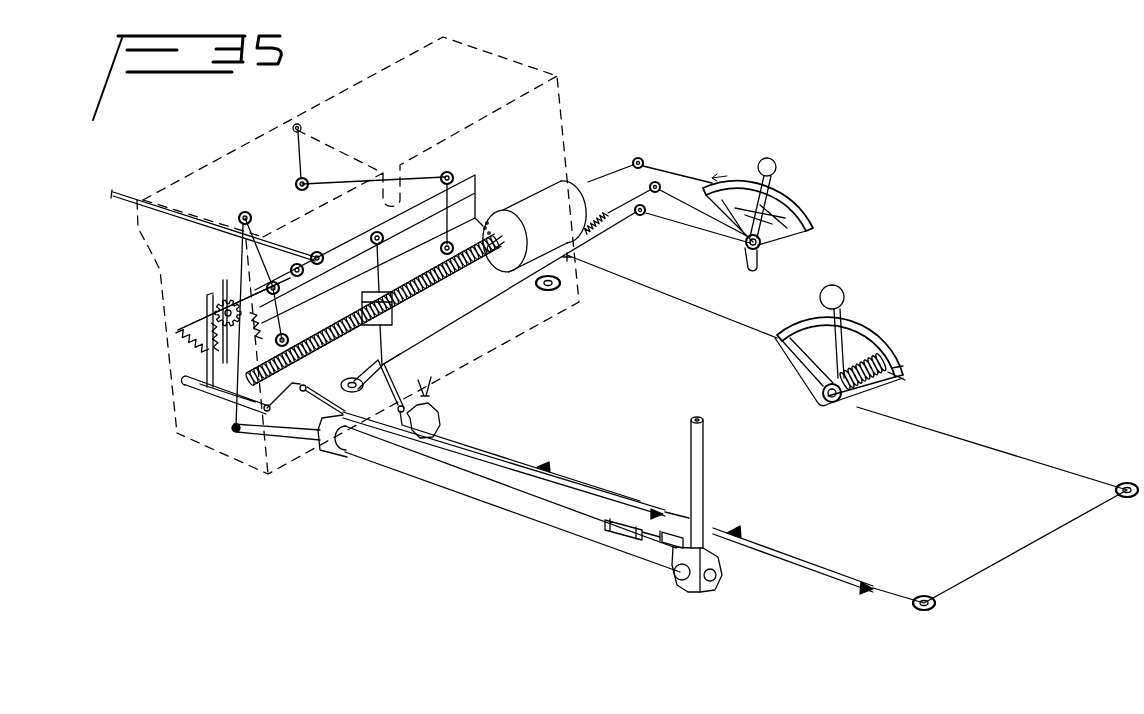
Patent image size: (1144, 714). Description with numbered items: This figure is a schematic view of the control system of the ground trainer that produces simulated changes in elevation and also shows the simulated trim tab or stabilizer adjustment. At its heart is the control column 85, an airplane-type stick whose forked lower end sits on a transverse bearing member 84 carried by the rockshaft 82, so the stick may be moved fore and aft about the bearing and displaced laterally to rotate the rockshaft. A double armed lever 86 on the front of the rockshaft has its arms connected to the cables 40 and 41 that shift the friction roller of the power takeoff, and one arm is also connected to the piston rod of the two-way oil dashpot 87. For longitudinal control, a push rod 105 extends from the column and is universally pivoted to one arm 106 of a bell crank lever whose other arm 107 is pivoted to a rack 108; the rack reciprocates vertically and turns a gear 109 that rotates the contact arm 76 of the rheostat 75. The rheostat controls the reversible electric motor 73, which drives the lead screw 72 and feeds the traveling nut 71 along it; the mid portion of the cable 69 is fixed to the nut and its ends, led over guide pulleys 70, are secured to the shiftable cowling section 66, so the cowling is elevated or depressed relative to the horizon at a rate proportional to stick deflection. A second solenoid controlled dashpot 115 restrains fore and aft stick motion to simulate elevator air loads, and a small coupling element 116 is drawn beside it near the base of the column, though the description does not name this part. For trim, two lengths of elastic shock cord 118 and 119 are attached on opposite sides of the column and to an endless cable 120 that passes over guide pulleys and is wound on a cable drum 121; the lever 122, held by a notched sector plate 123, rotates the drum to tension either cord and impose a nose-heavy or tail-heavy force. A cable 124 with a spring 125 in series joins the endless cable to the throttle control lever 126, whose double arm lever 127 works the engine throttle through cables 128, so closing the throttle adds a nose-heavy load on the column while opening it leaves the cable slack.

The cable 40 is at (231, 428).
The cable 41 is at (388, 333).
The shiftable cowling section 66 is at (560, 73).
The cable 69 is at (296, 158).
The guide pulleys 70 is at (280, 193).
The traveling nut 71 is at (372, 295).
The lead screw 72 is at (452, 286).
The reversible electric motor 73 is at (567, 184).
The rheostat 75 is at (174, 329).
The contact arm 76 is at (208, 350).
The rockshaft 82 is at (541, 522).
The transverse bearing member 84 is at (684, 588).
The control column 85 is at (704, 461).
The double armed lever 86 is at (300, 435).
The two-way oil dashpot 87 is at (435, 418).
The push rod 105 is at (523, 433).
The bell crank arm 106 is at (294, 398).
The bell crank arm 107 is at (233, 403).
The rack 108 is at (214, 292).
The gear 109 is at (218, 306).
The solenoid controlled dashpot 115 is at (630, 542).
The coupling 116 is at (680, 524).
The elastic shock cord 118 is at (617, 467).
The elastic shock cord 119 is at (801, 564).
The endless cable 120 is at (445, 331).
The cable drum 121 is at (893, 363).
The lever 122 is at (845, 296).
The notched sector plate 123 is at (803, 322).
The cable 124 is at (572, 258).
The spring 125 is at (606, 222).
The throttle control lever 126 is at (777, 171).
The double arm lever 127 is at (773, 249).
The cables 128 is at (697, 209).